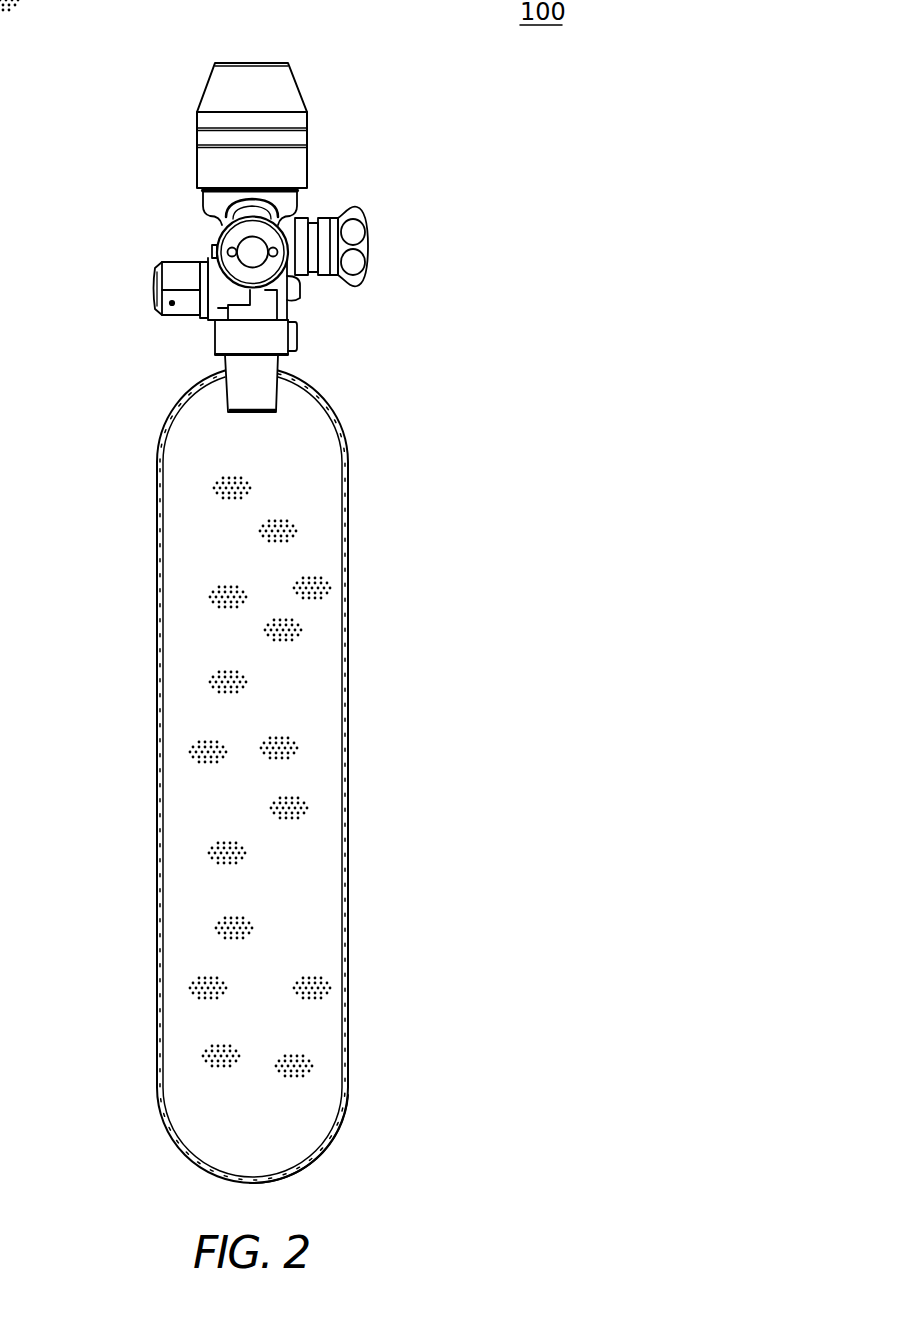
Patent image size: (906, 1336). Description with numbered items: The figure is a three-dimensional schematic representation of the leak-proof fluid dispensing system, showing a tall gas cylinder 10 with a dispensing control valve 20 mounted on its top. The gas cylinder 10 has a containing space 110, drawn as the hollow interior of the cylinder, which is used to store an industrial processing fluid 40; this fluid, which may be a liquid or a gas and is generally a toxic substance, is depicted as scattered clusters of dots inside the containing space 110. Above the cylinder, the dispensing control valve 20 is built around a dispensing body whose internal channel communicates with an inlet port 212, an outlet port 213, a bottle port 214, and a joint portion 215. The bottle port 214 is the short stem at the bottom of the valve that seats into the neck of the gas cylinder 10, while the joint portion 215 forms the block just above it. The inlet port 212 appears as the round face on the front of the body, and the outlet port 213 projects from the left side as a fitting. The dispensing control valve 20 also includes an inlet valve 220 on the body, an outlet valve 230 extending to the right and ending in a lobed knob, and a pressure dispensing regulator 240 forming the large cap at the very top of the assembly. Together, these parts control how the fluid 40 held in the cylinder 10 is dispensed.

The gas cylinder 10 is at (365, 838).
The containing space 110 is at (320, 1104).
The dispensing control valve 20 is at (383, 137).
The industrial processing fluid 40 is at (292, 745).
The inlet port 212 is at (258, 255).
The outlet port 213 is at (150, 285).
The bottle port 214 is at (248, 405).
The joint portion 215 is at (285, 358).
The inlet valve 220 is at (215, 222).
The outlet valve 230 is at (368, 240).
The pressure dispensing regulator 240 is at (222, 92).